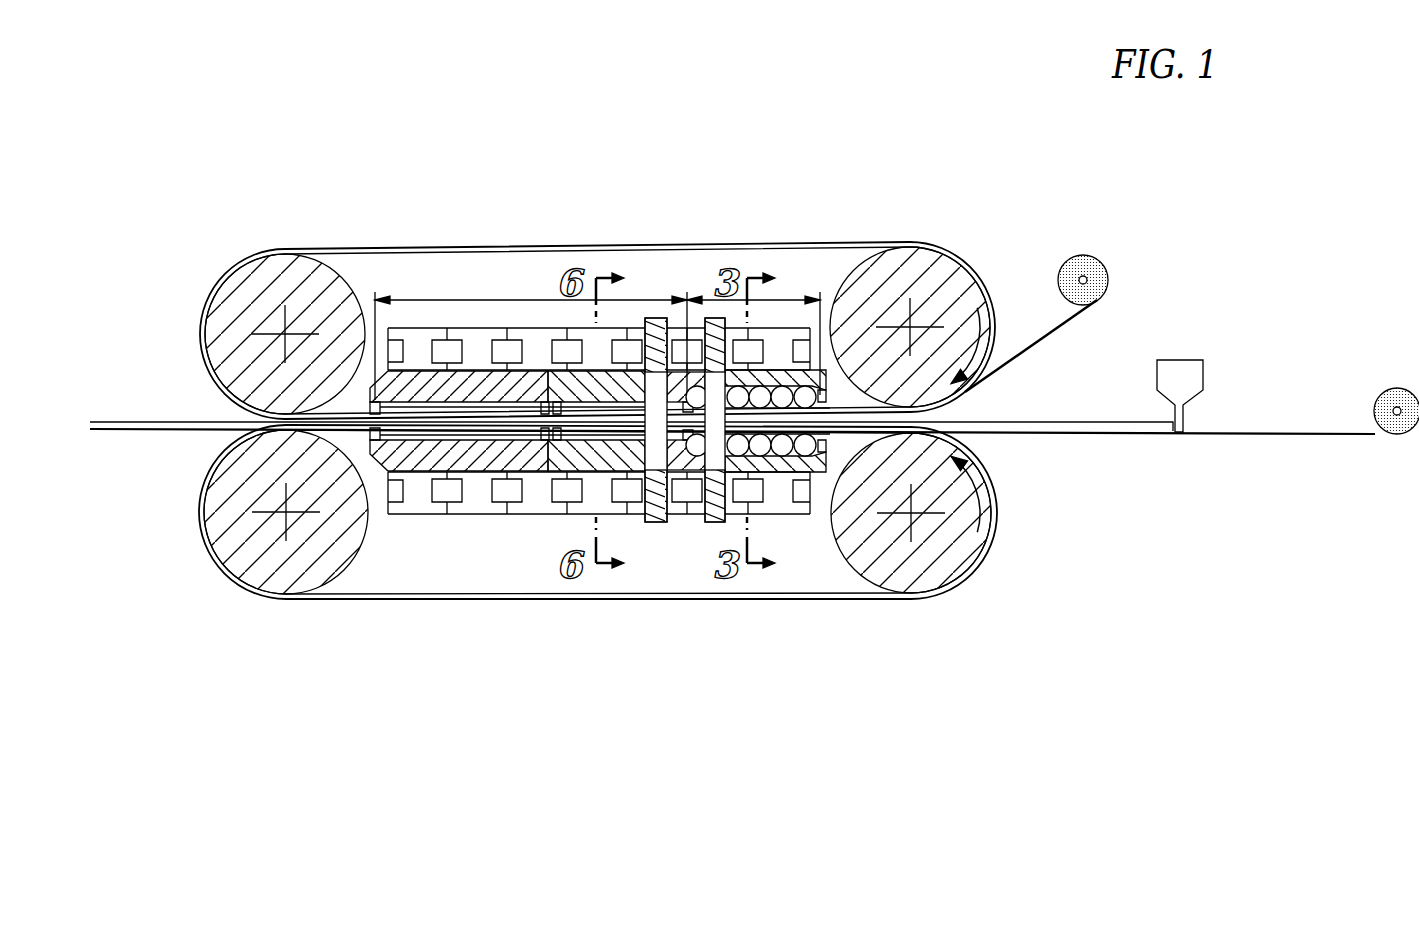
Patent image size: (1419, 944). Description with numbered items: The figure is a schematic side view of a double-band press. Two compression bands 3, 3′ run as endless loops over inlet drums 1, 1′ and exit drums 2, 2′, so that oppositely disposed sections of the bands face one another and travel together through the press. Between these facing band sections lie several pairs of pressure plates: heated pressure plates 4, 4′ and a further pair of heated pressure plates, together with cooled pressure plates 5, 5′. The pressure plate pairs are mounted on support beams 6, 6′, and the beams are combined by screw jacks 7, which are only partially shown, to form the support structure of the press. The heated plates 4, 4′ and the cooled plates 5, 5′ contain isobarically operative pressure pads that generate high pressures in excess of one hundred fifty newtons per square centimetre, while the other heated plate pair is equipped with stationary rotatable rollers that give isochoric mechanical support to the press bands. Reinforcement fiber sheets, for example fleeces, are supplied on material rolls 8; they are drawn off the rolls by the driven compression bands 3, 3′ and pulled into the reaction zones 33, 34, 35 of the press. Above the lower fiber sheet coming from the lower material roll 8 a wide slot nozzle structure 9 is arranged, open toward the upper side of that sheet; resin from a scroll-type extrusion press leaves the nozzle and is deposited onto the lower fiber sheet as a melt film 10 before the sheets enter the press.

The inlet drum 1 is at (945, 280).
The inlet drum 1′ is at (943, 565).
The exit drum 2 is at (262, 285).
The exit drum 2′ is at (265, 565).
The compression band 3 is at (541, 245).
The compression band 3′ is at (534, 600).
The heated pressure plate 4 is at (587, 390).
The heated pressure plate 4′ is at (605, 457).
The cooled pressure plate 5 is at (384, 390).
The cooled pressure plate 5′ is at (410, 457).
The support beam 6 is at (735, 335).
The support beam 6′ is at (737, 485).
The screw jack 7 is at (709, 320).
The material roll 8 is at (1084, 262).
The wide slot nozzle structure 9 is at (1178, 365).
The melt film 10 is at (1053, 424).
The reaction zone 33 is at (790, 340).
The reaction zone 34 is at (608, 410).
The reaction zone 35 is at (477, 418).